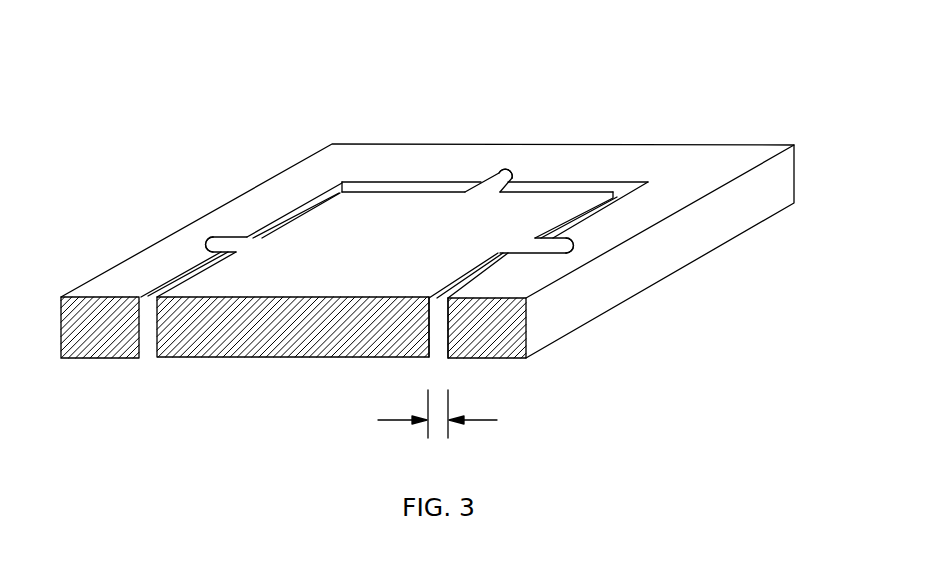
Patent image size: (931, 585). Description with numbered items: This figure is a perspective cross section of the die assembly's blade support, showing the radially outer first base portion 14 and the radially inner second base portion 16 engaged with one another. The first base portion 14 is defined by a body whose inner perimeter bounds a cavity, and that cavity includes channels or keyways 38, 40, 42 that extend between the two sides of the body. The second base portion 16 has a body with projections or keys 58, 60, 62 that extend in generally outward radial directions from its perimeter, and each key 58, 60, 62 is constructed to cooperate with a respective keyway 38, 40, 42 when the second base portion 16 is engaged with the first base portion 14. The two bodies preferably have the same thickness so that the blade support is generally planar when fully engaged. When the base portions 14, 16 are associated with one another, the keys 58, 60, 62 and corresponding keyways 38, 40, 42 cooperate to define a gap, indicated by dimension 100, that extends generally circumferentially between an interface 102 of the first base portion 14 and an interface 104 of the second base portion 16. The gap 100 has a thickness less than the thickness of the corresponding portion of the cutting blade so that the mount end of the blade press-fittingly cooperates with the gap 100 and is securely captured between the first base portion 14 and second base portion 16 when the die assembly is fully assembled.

The first base portion 14 is at (712, 227).
The second base portion 16 is at (378, 243).
The keyway 38 is at (207, 245).
The key 58 is at (221, 246).
The key 60 is at (500, 172).
The keyway 40 is at (511, 173).
The keyway 42 is at (578, 246).
The key 62 is at (558, 247).
The interface 104 is at (436, 358).
The interface 102 is at (442, 358).
The gap 100 is at (497, 420).